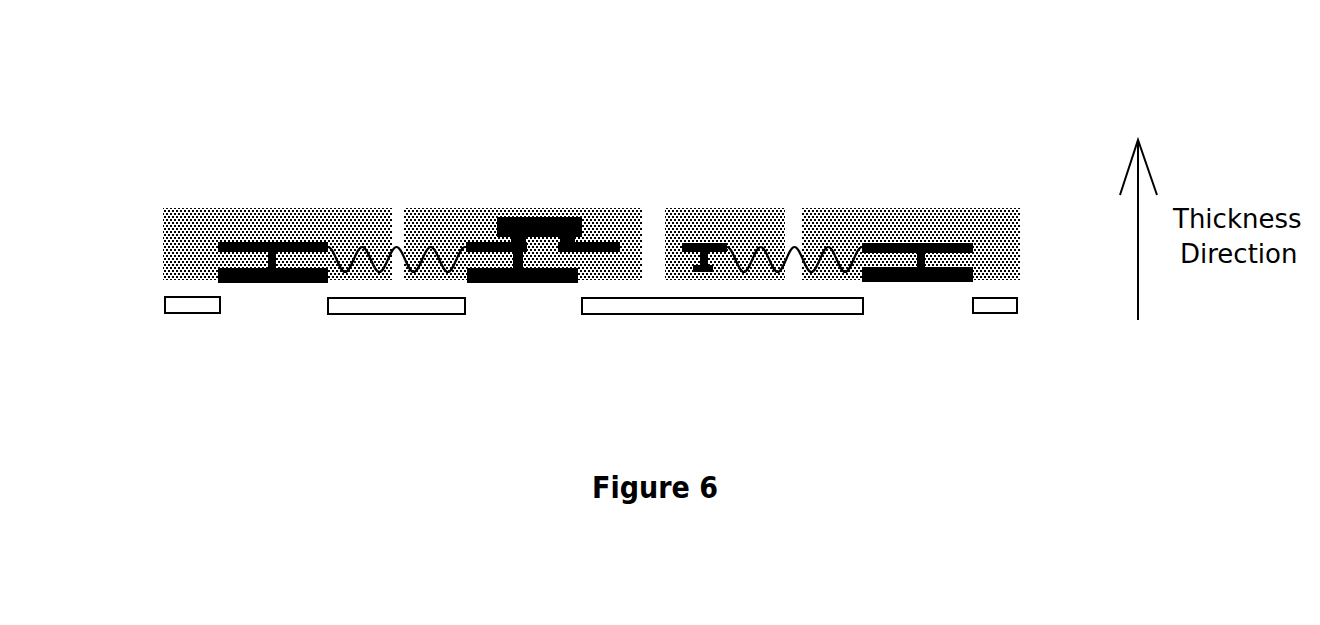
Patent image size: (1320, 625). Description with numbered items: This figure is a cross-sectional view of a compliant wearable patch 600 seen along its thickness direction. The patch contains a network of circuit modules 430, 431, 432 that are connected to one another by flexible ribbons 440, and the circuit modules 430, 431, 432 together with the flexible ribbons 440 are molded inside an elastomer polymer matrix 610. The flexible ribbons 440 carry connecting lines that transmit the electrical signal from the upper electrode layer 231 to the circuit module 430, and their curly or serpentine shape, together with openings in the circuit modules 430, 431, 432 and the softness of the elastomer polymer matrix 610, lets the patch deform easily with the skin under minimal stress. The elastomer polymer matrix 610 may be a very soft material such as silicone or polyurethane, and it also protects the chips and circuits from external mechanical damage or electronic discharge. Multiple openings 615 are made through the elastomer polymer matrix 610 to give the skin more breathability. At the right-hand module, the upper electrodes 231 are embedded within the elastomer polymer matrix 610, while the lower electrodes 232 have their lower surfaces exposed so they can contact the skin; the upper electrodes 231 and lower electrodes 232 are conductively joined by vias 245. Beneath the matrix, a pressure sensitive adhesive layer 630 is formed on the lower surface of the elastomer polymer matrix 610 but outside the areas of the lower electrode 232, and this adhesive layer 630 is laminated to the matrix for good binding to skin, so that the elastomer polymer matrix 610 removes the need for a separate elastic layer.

The compliant wearable patch 600 is at (143, 195).
The elastomer polymer matrix 610 is at (708, 212).
The opening 615 is at (395, 215).
The pressure sensitive adhesive layer 630 is at (193, 305).
The circuit module 431 is at (272, 248).
The circuit module 430 is at (550, 218).
The circuit module 432 is at (978, 235).
The flexible ribbon 440 is at (430, 247).
The upper electrode 231 is at (972, 245).
The via 245 is at (925, 257).
The lower electrode 232 is at (935, 283).